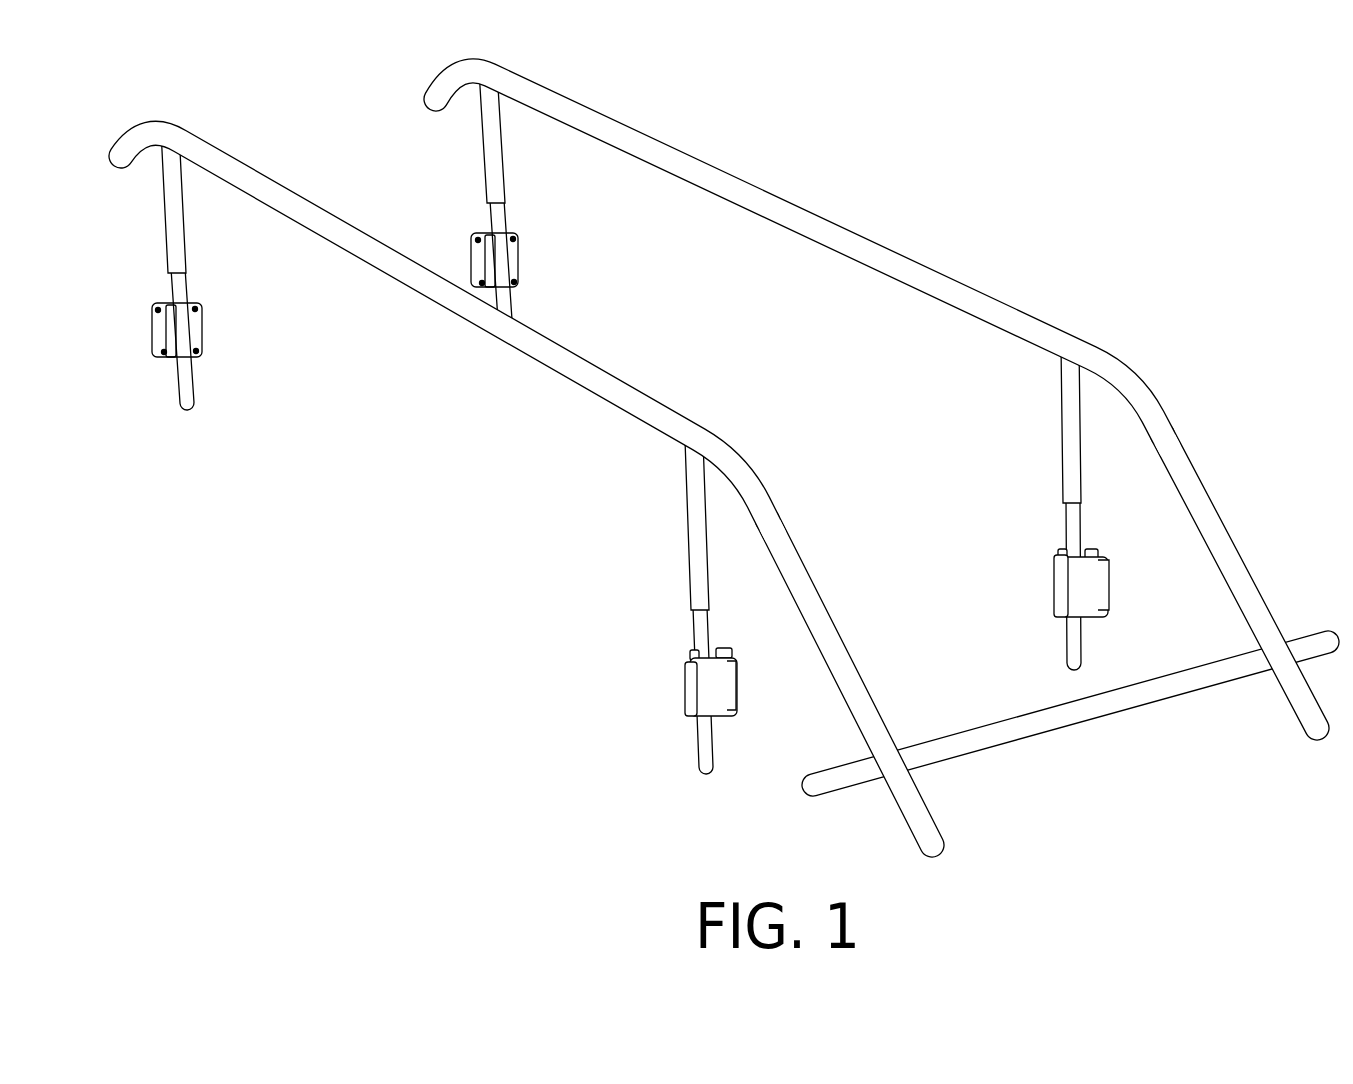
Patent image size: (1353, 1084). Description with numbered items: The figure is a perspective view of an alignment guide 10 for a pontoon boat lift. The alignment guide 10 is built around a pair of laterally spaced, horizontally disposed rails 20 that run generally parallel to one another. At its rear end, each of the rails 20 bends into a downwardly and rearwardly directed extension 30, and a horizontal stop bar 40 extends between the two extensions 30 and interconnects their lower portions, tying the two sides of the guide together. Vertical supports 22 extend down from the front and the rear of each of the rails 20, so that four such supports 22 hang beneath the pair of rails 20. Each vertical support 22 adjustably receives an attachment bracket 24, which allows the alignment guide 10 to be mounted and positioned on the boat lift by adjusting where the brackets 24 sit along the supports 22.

The alignment guide 10 is at (697, 457).
The rail 20 is at (735, 185).
The vertical support 22 is at (175, 238).
The attachment bracket 24 is at (167, 328).
The extension 30 is at (827, 628).
The stop bar 40 is at (1095, 712).